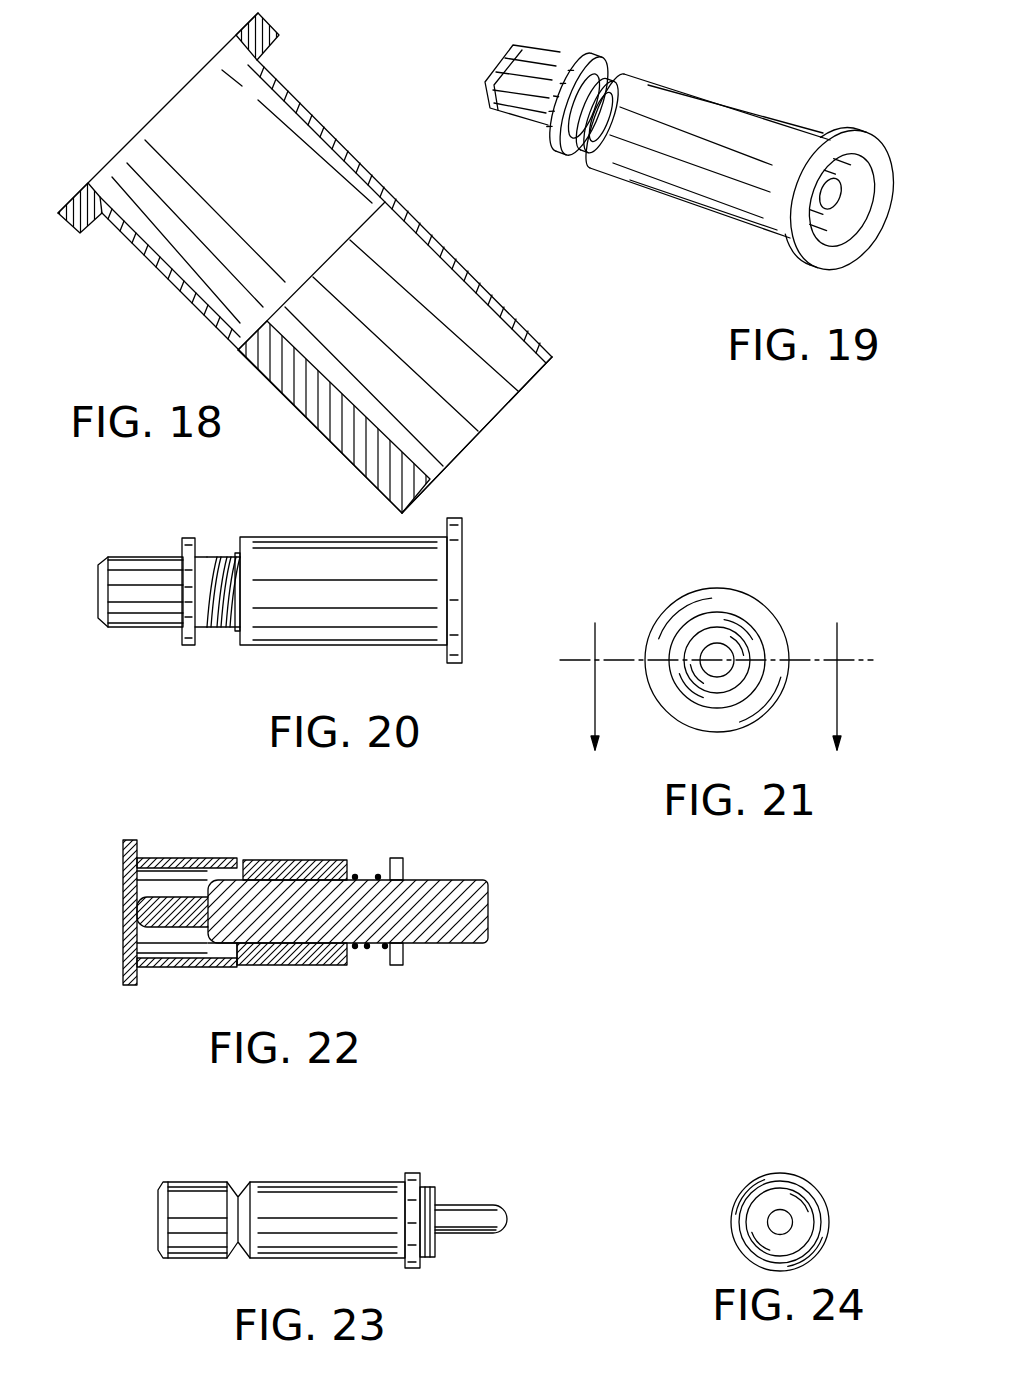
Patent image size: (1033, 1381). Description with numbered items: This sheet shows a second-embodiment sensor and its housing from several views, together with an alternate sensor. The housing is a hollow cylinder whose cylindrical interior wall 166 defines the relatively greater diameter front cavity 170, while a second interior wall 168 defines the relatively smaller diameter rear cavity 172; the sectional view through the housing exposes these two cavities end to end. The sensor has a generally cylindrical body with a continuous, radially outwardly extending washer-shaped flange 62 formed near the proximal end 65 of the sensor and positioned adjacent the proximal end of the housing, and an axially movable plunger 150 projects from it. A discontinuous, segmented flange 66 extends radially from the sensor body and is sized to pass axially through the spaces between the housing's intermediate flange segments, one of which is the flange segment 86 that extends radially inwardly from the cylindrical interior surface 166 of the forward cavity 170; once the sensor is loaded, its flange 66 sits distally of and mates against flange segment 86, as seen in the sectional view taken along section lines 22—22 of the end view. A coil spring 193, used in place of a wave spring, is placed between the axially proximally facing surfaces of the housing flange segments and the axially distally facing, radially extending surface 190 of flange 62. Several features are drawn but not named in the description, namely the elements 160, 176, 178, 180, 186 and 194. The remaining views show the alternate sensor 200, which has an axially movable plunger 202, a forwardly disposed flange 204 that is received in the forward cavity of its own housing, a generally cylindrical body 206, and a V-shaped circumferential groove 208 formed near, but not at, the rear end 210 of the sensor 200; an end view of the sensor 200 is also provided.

In FIG. 18, the connector housing assembly 160 is at (507, 292).
In FIG. 18, the cylindrical interior wall 166 is at (270, 88).
In FIG. 22, the cylindrical interior wall 166 is at (163, 958).
In FIG. 18, the interior wall 168 is at (488, 385).
In FIG. 18, the front cavity 170 is at (268, 182).
In FIG. 22, the front cavity 170 is at (162, 878).
In FIG. 18, the rear cavity 172 is at (447, 362).
In FIG. 19, the washer-shaped flange 62 is at (583, 55).
In FIG. 20, the washer-shaped flange 62 is at (188, 646).
In FIG. 20, the proximal end 65 is at (98, 583).
In FIG. 19, the axially movable plunger 150 is at (829, 202).
In FIG. 19, the axially distally facing surface 190 is at (581, 157).
In FIG. 20, the axially distally facing surface 190 is at (197, 538).
In FIG. 22, the axially distally facing surface 190 is at (397, 860).
In FIG. 19, the coil spring 193 is at (617, 78).
In FIG. 20, the coil spring 193 is at (235, 555).
In FIG. 22, the coil spring 193 is at (378, 876).
In FIG. 20, the threads 186 is at (234, 640).
In FIG. 22, the threads 186 is at (348, 961).
In FIG. 20, the flange 194 is at (453, 664).
In FIG. 21, the flange 194 is at (737, 602).
In FIG. 22, the flange 194 is at (145, 838).
In FIG. 21, the inner sleeve 178 is at (717, 653).
In FIG. 22, the inner sleeve 178 is at (145, 908).
In FIG. 21, the section line 22 is at (715, 686).
In FIG. 22, the plug body 176 is at (435, 880).
In FIG. 22, the sleeve 180 is at (293, 966).
In FIG. 22, the flange segment 86 is at (241, 949).
In FIG. 22, the discontinuous flange 66 is at (237, 950).
In FIG. 23, the rear end 210 is at (158, 1213).
In FIG. 23, the V-shaped circumferential groove 208 is at (233, 1190).
In FIG. 23, the generally cylindrical body 206 is at (333, 1182).
In FIG. 23, the forwardly disposed flange 204 is at (412, 1268).
In FIG. 24, the forwardly disposed flange 204 is at (802, 1180).
In FIG. 23, the axially movable plunger 202 is at (465, 1233).
In FIG. 24, the axially movable plunger 202 is at (783, 1222).
In FIG. 23, the alternate embodiment sensor 200 is at (460, 1200).
In FIG. 24, the alternate embodiment sensor 200 is at (737, 1170).